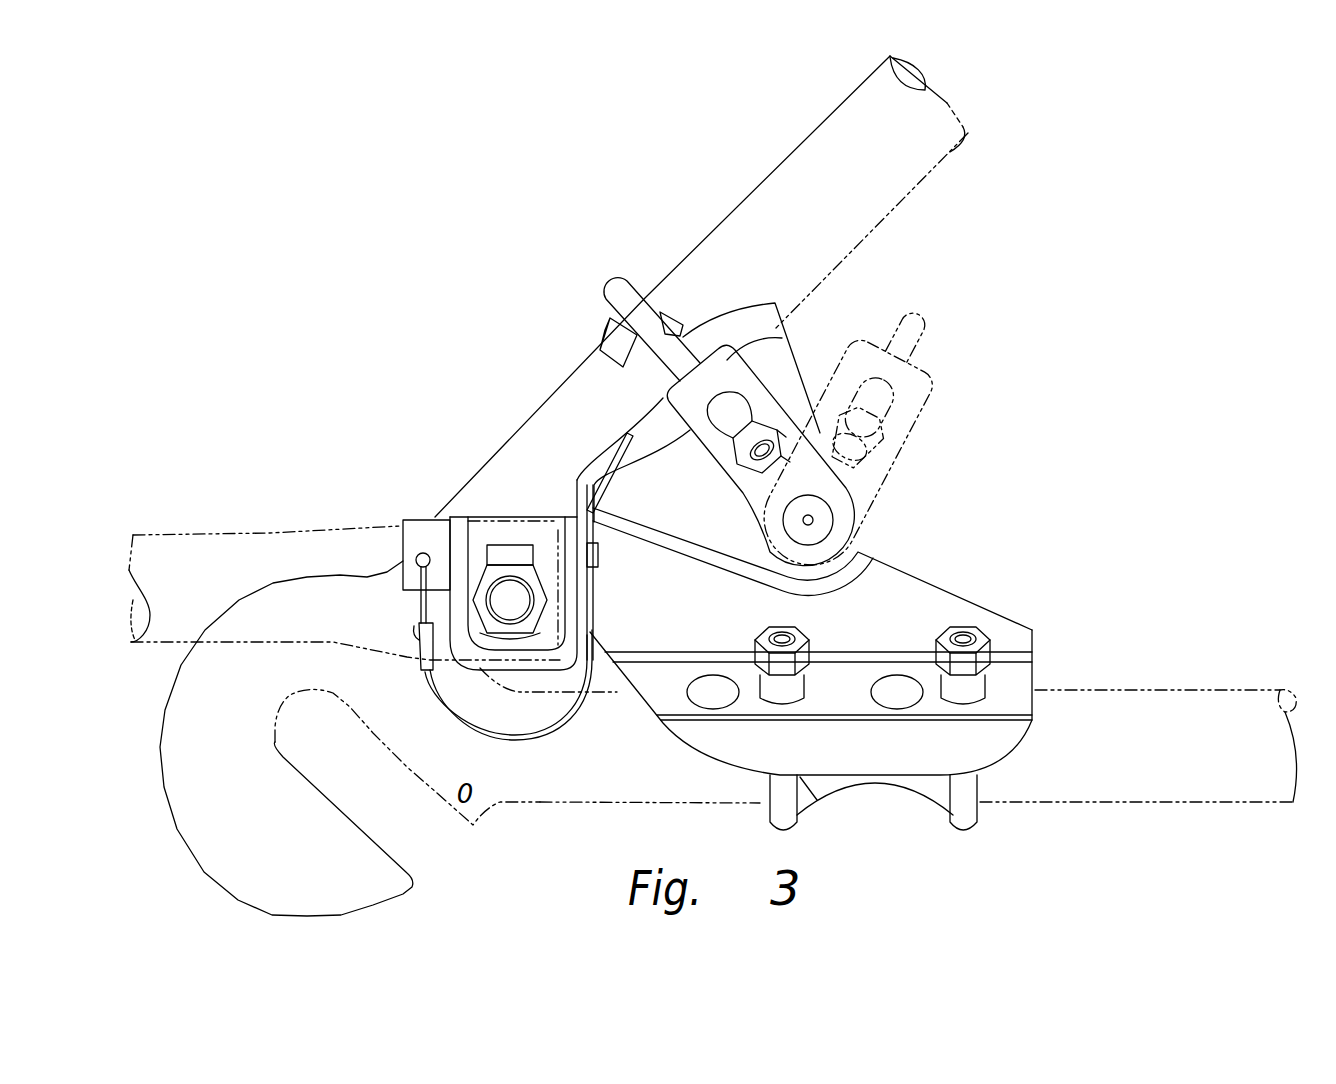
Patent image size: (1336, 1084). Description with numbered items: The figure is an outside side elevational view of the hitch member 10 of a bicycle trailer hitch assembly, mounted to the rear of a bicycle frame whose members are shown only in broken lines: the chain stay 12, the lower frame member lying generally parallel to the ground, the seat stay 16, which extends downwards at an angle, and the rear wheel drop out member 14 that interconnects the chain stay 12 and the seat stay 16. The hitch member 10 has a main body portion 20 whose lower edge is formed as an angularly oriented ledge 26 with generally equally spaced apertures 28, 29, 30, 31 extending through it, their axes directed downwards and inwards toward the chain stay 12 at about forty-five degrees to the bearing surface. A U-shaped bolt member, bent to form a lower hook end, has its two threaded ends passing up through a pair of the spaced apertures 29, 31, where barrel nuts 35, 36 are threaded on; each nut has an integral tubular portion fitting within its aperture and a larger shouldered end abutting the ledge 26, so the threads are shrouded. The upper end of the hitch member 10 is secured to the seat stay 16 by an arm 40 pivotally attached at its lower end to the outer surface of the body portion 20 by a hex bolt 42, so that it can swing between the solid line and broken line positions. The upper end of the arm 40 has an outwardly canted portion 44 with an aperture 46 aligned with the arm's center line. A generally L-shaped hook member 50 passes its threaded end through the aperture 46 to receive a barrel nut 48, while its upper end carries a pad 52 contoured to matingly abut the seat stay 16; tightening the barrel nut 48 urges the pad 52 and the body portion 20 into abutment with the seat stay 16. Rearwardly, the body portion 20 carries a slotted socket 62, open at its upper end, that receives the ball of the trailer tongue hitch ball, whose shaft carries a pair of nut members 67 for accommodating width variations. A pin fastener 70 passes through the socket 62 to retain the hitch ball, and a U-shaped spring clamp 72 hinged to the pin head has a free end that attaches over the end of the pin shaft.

The hitch member 10 is at (1012, 494).
The chain stay 12 is at (1137, 780).
The rear wheel drop out member 14 is at (290, 849).
The seat stay 16 is at (793, 172).
The main body portion 20 is at (925, 590).
The ledge 26 is at (1000, 765).
The aperture 28 is at (707, 678).
The aperture 29 is at (807, 688).
The aperture 30 is at (897, 683).
The aperture 31 is at (990, 692).
The barrel nut 35 is at (785, 627).
The barrel nut 36 is at (978, 628).
The arm 40 is at (758, 414).
The hex bolt 42 is at (790, 520).
The outwardly canted portion 44 is at (670, 398).
The aperture 46 is at (778, 343).
The barrel nut 48 is at (730, 438).
The hook member 50 is at (632, 288).
The pad 52 is at (613, 330).
The slotted socket 62 is at (483, 535).
The nut members 67 is at (540, 593).
The pin fastener 70 is at (410, 538).
The spring clamp 72 is at (520, 737).